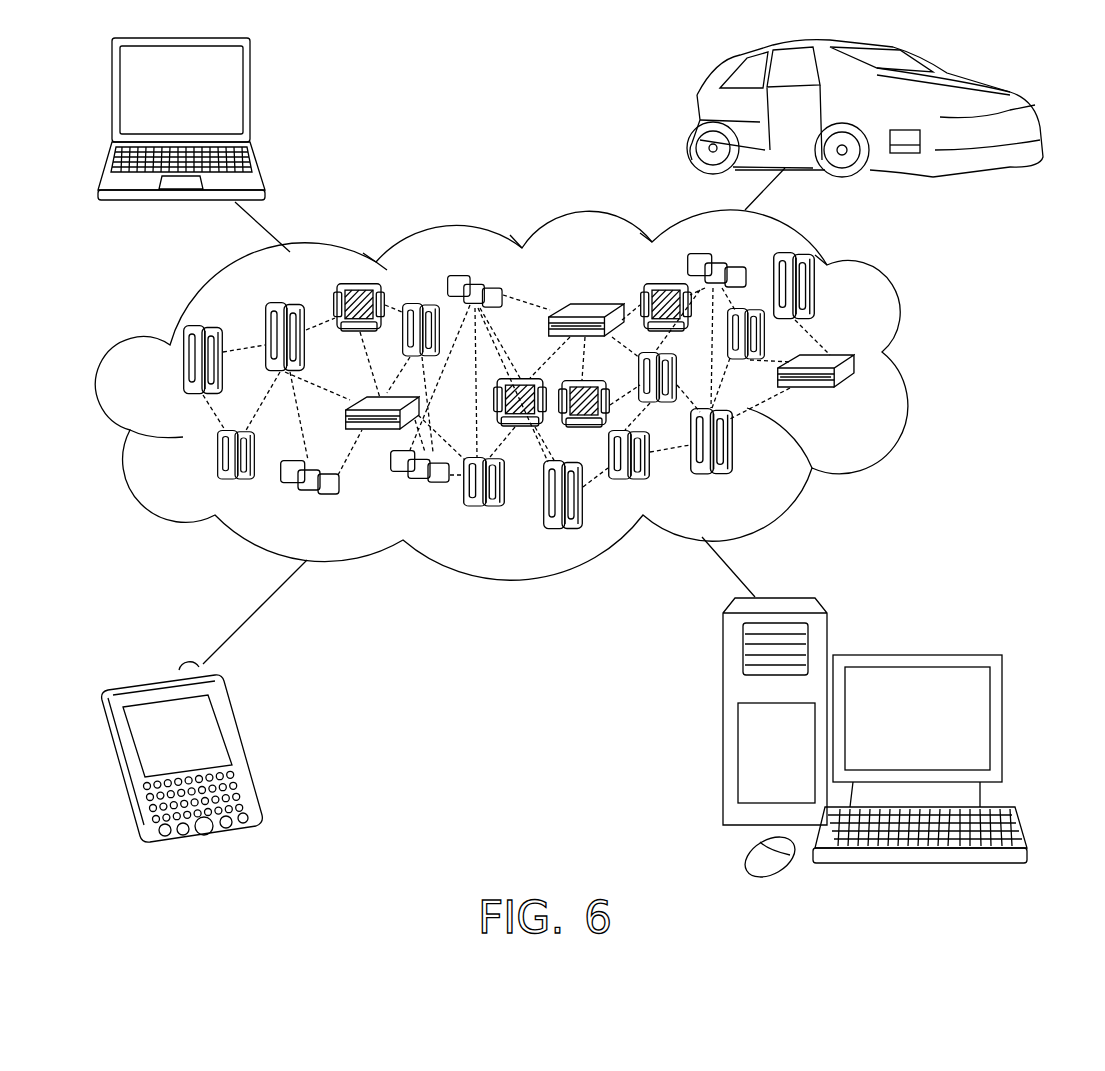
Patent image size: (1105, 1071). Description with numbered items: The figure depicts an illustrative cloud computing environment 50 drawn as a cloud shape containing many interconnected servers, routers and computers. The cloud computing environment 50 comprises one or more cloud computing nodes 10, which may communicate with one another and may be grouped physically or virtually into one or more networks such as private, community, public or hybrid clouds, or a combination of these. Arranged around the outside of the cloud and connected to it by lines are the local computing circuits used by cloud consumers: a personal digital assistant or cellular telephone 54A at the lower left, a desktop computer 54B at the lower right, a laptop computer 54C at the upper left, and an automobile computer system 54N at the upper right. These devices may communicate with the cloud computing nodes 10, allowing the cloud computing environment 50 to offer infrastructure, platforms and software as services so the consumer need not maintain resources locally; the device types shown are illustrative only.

The cloud computing nodes 10 is at (857, 400).
The cloud computing environment 50 is at (918, 368).
The personal digital assistant (PDA) or cellular telephone 54A is at (240, 748).
The desktop computer 54B is at (913, 655).
The laptop computer 54C is at (258, 98).
The automobile computer system 54N is at (695, 117).